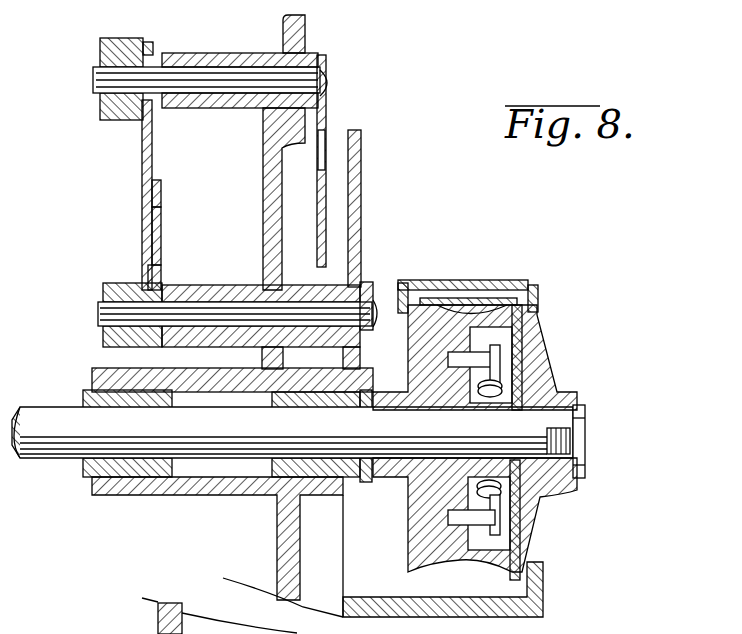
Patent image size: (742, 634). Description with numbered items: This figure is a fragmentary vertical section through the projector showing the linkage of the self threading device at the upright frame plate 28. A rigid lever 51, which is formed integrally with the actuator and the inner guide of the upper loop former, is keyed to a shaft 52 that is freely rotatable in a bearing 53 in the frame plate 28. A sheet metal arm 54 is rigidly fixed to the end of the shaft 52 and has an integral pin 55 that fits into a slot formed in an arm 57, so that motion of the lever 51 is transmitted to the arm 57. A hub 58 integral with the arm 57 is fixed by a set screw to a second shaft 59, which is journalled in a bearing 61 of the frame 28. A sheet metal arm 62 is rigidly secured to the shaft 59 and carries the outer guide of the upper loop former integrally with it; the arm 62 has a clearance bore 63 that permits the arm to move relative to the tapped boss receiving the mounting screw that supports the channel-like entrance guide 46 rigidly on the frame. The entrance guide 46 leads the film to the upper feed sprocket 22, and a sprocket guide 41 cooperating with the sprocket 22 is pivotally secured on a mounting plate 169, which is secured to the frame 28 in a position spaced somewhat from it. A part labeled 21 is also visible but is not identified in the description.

The hub 58 is at (108, 39).
The shaft 59 is at (106, 76).
The bearing 61 is at (214, 53).
The arm 57 is at (142, 147).
The pin 55 is at (146, 203).
The sheet metal arm 54 is at (160, 243).
The bearing 53 is at (215, 287).
The shaft 52 is at (104, 310).
The upright frame plate 28 is at (262, 154).
The sheet metal arm 62 is at (326, 120).
The clearance bore 63 is at (326, 163).
The mounting plate 169 is at (361, 190).
The rigid lever 51 is at (370, 288).
The sprocket guide 41 is at (442, 281).
The ring 21 is at (484, 297).
The upper feed sprocket 22 is at (540, 357).
The entrance guide 46 is at (544, 571).